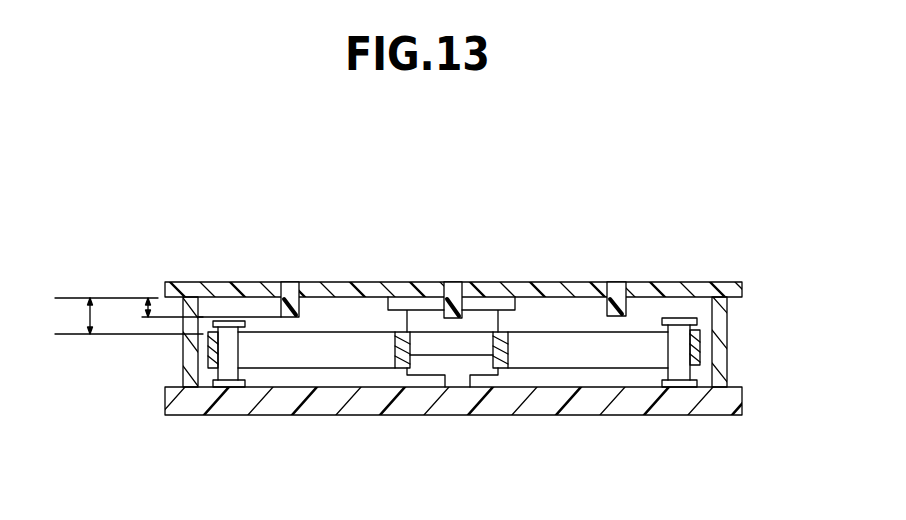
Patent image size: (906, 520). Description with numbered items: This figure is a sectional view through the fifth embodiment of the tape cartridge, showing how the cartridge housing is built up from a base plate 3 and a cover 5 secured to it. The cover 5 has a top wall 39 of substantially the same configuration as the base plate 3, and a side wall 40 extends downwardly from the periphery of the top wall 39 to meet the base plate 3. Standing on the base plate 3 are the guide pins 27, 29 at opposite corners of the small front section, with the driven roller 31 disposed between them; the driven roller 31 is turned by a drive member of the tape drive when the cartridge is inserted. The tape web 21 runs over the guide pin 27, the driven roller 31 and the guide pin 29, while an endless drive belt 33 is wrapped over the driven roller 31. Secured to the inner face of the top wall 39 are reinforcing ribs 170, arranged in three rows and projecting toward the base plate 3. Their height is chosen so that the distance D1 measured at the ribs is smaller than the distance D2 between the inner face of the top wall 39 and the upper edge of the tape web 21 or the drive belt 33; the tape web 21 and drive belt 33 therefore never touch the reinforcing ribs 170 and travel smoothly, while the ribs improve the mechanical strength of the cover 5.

The base plate 3 is at (742, 413).
The cover 5 is at (487, 280).
The tape web 21 is at (208, 362).
The guide pin 27 is at (673, 352).
The guide pin 29 is at (229, 365).
The driven roller 31 is at (477, 325).
The drive belt 33 is at (505, 350).
The top wall 39 is at (687, 282).
The side wall 40 is at (726, 282).
The reinforcing ribs 170 is at (291, 302).
The distance D1 is at (142, 310).
The distance D2 is at (123, 316).